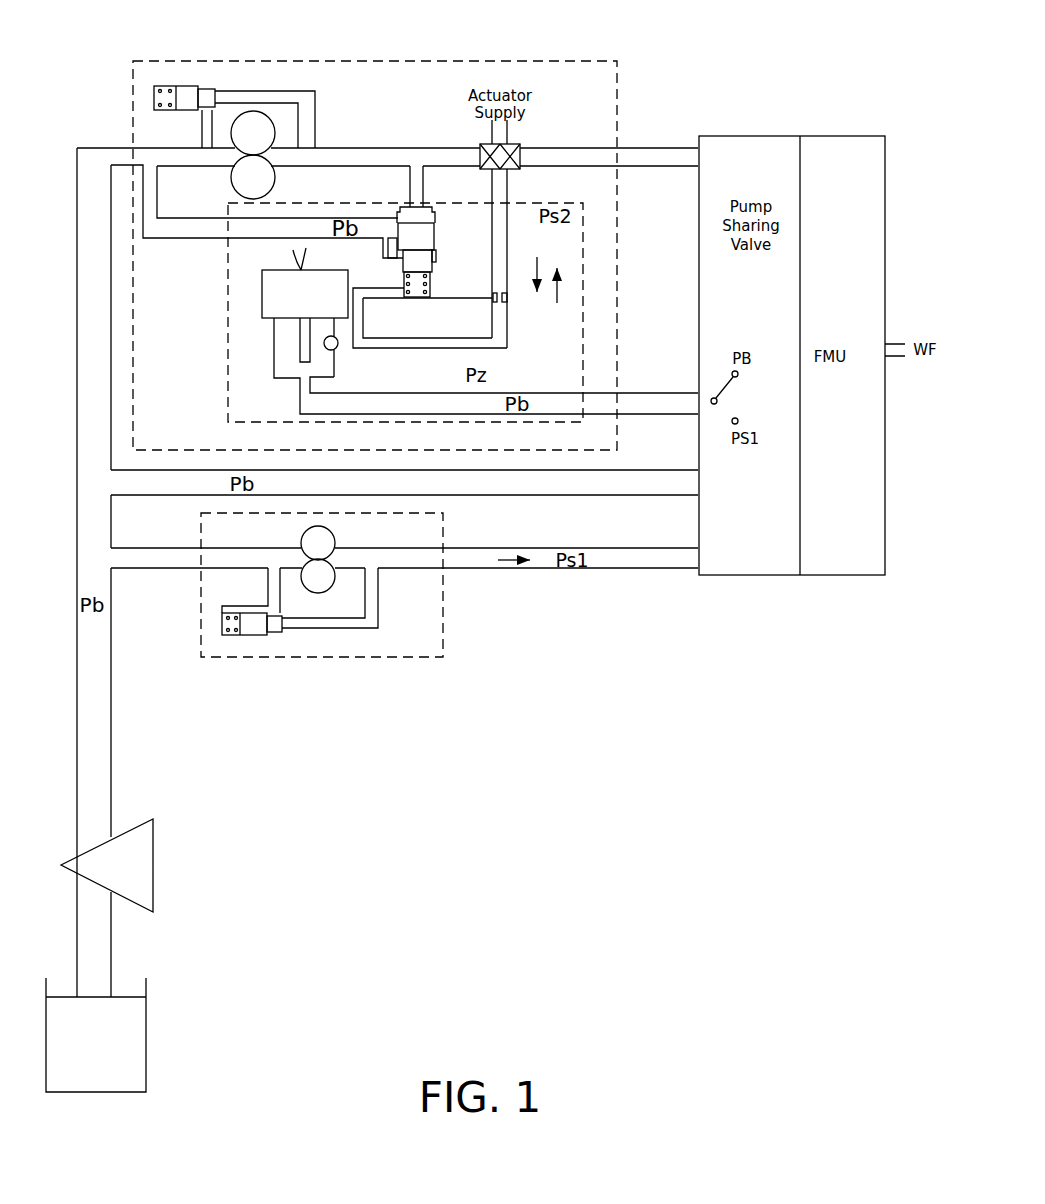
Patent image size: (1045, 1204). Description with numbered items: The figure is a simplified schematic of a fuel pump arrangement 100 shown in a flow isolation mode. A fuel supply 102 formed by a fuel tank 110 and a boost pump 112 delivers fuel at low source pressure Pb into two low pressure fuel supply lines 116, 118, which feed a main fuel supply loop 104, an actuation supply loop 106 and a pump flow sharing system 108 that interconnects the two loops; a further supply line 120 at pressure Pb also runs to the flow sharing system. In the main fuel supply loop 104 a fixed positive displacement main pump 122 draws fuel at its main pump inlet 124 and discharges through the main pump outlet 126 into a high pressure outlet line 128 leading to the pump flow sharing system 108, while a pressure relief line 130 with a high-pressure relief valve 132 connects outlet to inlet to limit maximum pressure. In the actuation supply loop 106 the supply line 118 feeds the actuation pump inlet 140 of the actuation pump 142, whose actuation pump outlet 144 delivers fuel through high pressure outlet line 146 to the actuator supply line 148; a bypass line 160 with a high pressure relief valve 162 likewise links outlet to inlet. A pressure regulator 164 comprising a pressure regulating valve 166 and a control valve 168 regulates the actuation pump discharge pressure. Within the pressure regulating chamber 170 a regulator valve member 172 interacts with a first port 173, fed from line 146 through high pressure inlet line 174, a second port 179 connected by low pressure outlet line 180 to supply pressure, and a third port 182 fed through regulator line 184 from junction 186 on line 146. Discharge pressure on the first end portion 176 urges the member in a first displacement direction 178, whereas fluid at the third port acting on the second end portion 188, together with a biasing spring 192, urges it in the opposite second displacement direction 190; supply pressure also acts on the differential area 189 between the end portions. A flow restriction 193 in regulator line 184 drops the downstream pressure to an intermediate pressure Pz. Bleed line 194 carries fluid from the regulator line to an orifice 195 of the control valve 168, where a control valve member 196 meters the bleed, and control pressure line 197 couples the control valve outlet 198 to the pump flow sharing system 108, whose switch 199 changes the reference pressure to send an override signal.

The pump arrangement 100 is at (596, 738).
The fuel supply 102 is at (176, 942).
The main fuel supply loop 104 is at (405, 658).
The actuation supply loop 106 is at (618, 278).
The pump flow sharing system 108 is at (751, 577).
The fuel tank 110 is at (147, 1038).
The boost pump 112 is at (156, 844).
The low pressure fuel supply line 116 is at (148, 563).
The low pressure fuel supply line 118 is at (108, 146).
The supply line 120 is at (157, 478).
The main pump 122 is at (318, 588).
The main pump inlet 124 is at (301, 560).
The main pump outlet 126 is at (335, 560).
The high pressure outlet line 128 is at (430, 565).
The pressure relief line 130 is at (372, 602).
The high-pressure relief valve 132 is at (268, 648).
The actuation pump inlet 140 is at (231, 163).
The actuation pump 142 is at (262, 128).
The actuation pump outlet 144 is at (270, 158).
The high pressure outlet line 146 is at (413, 147).
The actuator supply line 148 is at (492, 138).
The bypass line 160 is at (245, 96).
The high pressure relief valve 162 is at (191, 76).
The pressure regulator 164 is at (583, 323).
The pressure regulating valve 166 is at (450, 308).
The control valve 168 is at (268, 265).
The pressure regulating chamber 170 is at (436, 218).
The regulator valve member 172 is at (433, 273).
The first port 173 is at (428, 207).
The high pressure inlet line 174 is at (420, 184).
The first end portion 176 is at (413, 228).
The first displacement direction 178 is at (535, 283).
The second port 179 is at (383, 221).
The low pressure outlet line 180 is at (163, 240).
The third port 182 is at (410, 298).
The regulator line 184 is at (437, 348).
The junction 186 is at (514, 142).
The second end portion 188 is at (403, 283).
The differential area 189 is at (436, 256).
The second displacement direction 190 is at (557, 292).
The biasing spring 192 is at (427, 296).
The flow restriction 193 is at (516, 322).
The bleed line 194 is at (337, 352).
The orifice 195 is at (338, 338).
The control valve member 196 is at (300, 342).
The control pressure line 197 is at (600, 392).
The control valve outlet 198 is at (306, 377).
The switch 199 is at (792, 332).